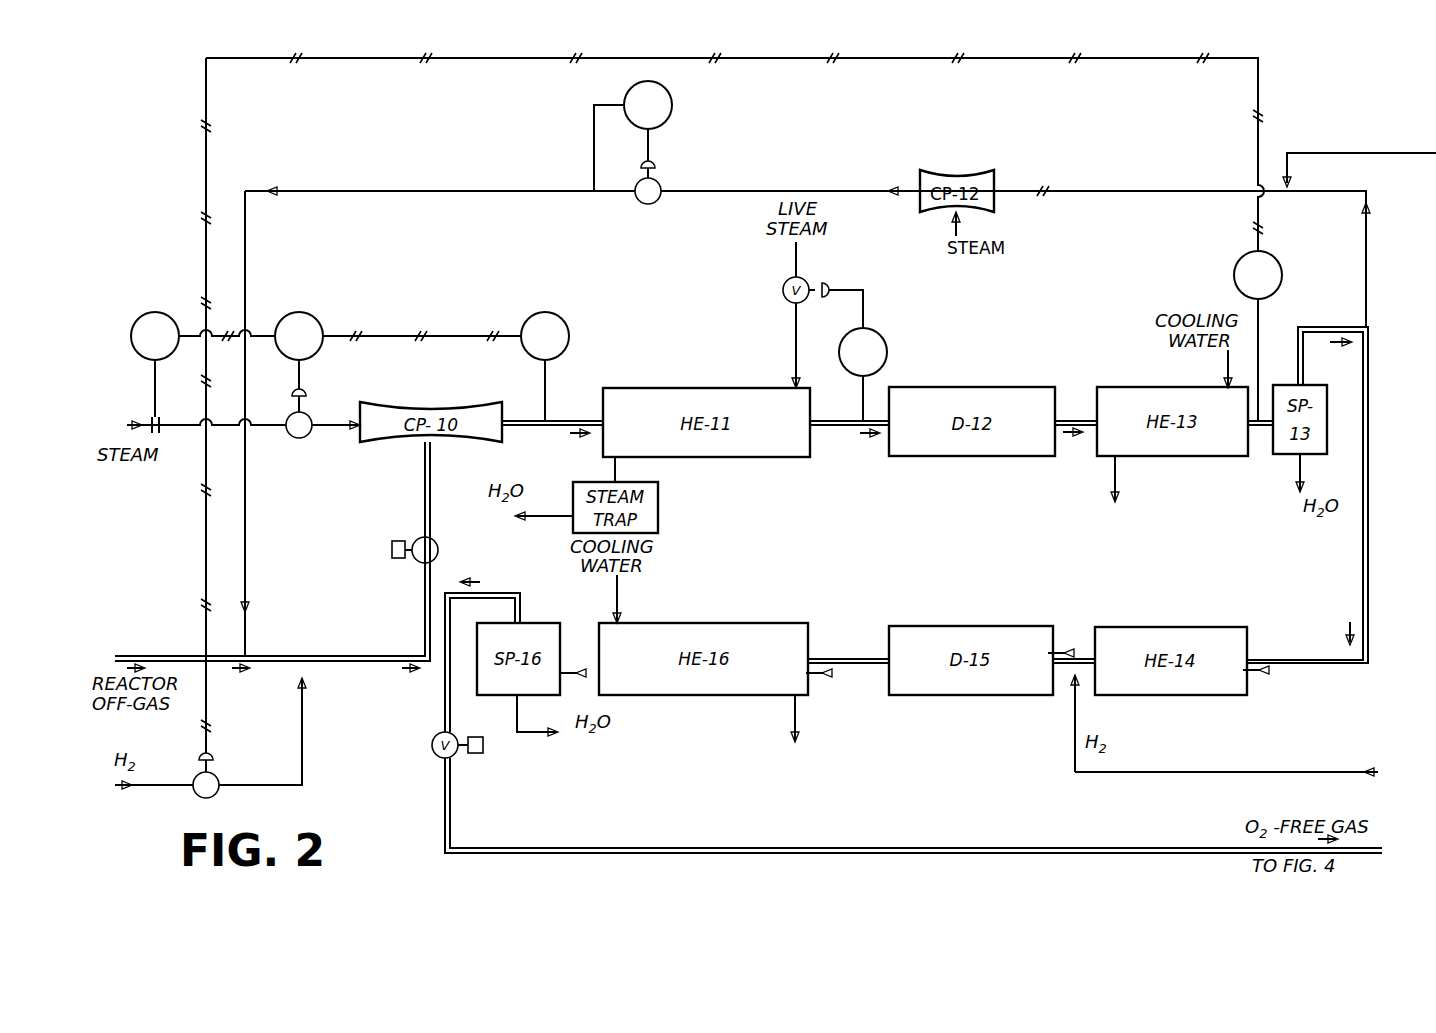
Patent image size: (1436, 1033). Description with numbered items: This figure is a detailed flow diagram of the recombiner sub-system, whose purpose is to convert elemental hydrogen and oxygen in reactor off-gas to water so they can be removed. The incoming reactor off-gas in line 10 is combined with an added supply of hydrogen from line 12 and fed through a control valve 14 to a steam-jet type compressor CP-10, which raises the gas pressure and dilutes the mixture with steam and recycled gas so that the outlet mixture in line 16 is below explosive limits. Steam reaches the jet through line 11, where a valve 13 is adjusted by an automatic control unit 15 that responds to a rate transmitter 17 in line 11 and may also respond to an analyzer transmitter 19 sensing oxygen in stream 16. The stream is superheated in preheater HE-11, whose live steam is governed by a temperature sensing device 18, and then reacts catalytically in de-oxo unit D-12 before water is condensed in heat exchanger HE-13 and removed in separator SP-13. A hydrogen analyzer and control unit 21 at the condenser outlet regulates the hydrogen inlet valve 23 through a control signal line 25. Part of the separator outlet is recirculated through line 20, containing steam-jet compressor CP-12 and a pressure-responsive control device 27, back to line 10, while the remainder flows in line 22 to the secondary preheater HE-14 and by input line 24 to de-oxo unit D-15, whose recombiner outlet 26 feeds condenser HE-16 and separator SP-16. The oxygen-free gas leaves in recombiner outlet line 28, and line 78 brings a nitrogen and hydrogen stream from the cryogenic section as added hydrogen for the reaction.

The reactor off-gas line 10 is at (172, 656).
The steam supply line 11 is at (196, 423).
The hydrogen supply line 12 is at (302, 716).
The steam regulating valve 13 is at (307, 437).
The control valve 14 is at (417, 563).
The automatic control unit 15 is at (297, 314).
The outlet line 16 is at (528, 421).
The rate transmitter 17 is at (154, 316).
The temperature sensing device 18 is at (882, 336).
The analyzer transmitter 19 is at (566, 326).
The recirculation line 20 is at (778, 191).
The hydrogen analyzer and control unit 21 is at (1278, 262).
The line to secondary recombiner system 22 is at (1369, 629).
The hydrogen inlet valve 23 is at (216, 781).
The input line 24 is at (1090, 658).
The control signal line 25 is at (777, 58).
The recombiner outlet 26 is at (860, 659).
The pressure-responsive control device 27 is at (672, 105).
The recombiner outlet line 28 is at (445, 806).
The line from cryogenic section 78 is at (1320, 152).